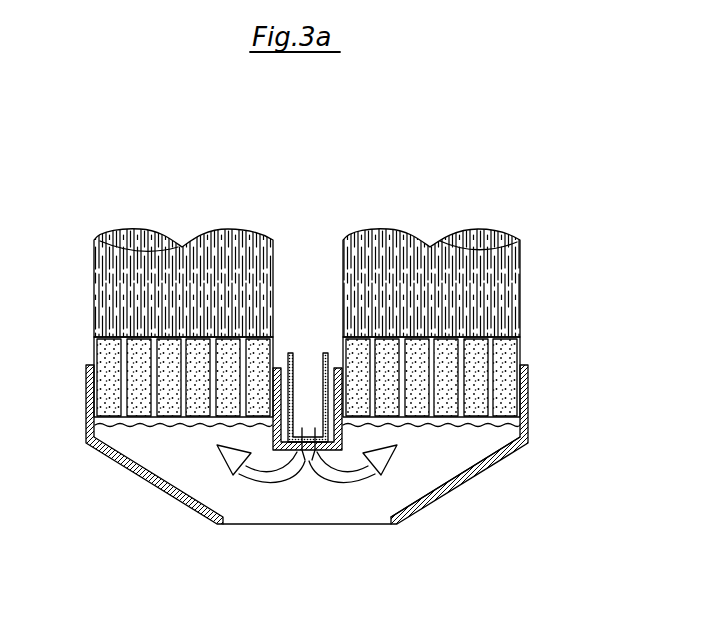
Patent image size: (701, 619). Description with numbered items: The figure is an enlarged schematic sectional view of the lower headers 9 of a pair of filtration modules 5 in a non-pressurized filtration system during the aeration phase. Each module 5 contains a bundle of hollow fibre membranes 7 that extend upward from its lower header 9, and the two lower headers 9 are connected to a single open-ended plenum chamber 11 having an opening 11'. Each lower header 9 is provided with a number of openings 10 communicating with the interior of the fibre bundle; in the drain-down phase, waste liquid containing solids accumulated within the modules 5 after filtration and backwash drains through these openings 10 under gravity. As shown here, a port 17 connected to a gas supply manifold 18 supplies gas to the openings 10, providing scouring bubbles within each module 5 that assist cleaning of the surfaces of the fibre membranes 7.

The filtration module 5 is at (517, 305).
The hollow fibre membranes 7 is at (500, 292).
The lower header 9 is at (503, 358).
The openings 10 is at (157, 415).
The plenum chamber 11 is at (465, 479).
The opening 11' is at (288, 553).
The port 17 is at (310, 450).
The gas supply manifold 18 is at (300, 373).